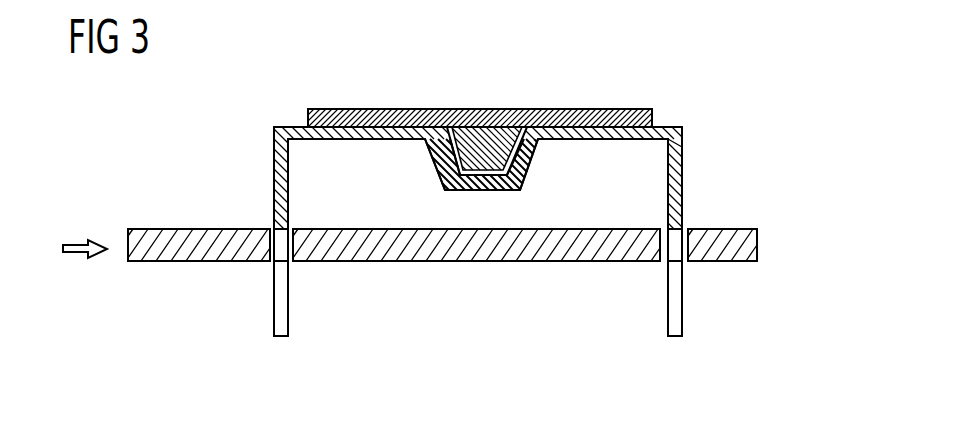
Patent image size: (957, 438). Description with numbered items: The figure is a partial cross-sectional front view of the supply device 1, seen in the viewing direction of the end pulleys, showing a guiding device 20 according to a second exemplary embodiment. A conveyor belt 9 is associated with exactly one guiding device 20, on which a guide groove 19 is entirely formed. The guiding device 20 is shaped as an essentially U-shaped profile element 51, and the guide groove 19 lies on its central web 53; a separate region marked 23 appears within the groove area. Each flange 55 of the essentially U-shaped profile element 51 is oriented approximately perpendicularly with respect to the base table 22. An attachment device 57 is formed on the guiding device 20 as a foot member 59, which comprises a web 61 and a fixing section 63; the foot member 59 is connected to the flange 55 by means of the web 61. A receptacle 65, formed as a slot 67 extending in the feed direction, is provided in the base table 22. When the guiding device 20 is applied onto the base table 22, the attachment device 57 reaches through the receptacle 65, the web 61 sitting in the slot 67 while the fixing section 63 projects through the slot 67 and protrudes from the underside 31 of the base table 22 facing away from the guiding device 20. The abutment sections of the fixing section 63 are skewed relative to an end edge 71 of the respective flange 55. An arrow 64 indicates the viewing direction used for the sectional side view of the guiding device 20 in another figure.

The supply device 1 is at (705, 84).
The conveyor belt 9 is at (348, 109).
The guide groove 19 is at (455, 157).
The guiding device 20 is at (441, 236).
The essentially U-shaped profile element 51 is at (262, 150).
The base table 22 is at (137, 229).
The receptacle 23 is at (530, 162).
The underside 31 is at (478, 280).
The central web 53 is at (355, 140).
The flange 55 is at (290, 200).
The attachment device 57 is at (434, 291).
The foot member 59 is at (318, 297).
The web 61 is at (255, 262).
The fixing section 63 is at (256, 312).
The arrow 64 is at (75, 245).
The receptacle 65 is at (265, 219).
The slot 67 is at (230, 202).
The end edge 71 is at (680, 233).